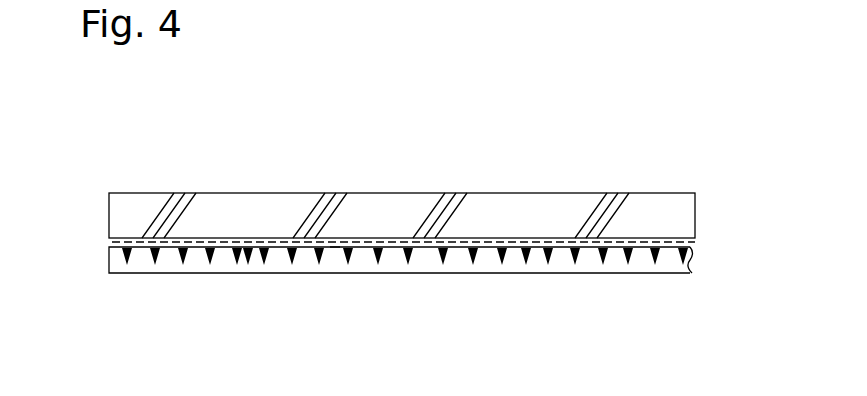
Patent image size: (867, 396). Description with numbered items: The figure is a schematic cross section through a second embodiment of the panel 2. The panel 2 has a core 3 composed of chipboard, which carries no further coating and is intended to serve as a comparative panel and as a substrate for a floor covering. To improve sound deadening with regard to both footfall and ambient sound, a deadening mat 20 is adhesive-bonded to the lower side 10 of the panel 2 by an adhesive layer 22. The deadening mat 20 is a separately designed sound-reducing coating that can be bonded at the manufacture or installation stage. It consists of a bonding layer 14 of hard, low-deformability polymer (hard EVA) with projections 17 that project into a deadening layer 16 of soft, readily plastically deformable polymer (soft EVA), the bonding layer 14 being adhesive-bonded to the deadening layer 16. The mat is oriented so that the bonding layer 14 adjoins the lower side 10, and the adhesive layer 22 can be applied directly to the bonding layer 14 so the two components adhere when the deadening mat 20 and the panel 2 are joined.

The panel 2 is at (510, 145).
The core 3 is at (523, 226).
The lower side 10 is at (109, 243).
The bonding layer 14 is at (333, 247).
The deadening layer 16 is at (248, 263).
The projections 17 is at (380, 258).
The deadening mat 20 is at (107, 262).
The adhesive layer 22 is at (445, 243).